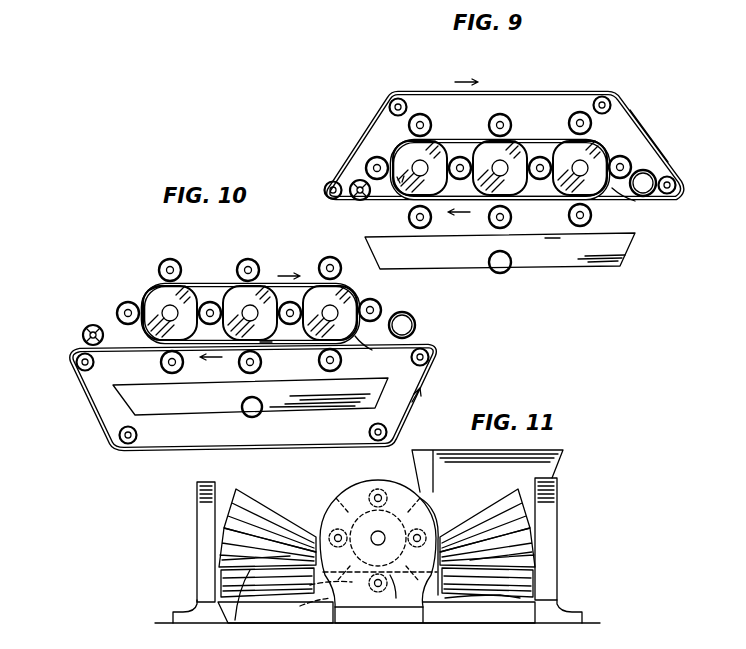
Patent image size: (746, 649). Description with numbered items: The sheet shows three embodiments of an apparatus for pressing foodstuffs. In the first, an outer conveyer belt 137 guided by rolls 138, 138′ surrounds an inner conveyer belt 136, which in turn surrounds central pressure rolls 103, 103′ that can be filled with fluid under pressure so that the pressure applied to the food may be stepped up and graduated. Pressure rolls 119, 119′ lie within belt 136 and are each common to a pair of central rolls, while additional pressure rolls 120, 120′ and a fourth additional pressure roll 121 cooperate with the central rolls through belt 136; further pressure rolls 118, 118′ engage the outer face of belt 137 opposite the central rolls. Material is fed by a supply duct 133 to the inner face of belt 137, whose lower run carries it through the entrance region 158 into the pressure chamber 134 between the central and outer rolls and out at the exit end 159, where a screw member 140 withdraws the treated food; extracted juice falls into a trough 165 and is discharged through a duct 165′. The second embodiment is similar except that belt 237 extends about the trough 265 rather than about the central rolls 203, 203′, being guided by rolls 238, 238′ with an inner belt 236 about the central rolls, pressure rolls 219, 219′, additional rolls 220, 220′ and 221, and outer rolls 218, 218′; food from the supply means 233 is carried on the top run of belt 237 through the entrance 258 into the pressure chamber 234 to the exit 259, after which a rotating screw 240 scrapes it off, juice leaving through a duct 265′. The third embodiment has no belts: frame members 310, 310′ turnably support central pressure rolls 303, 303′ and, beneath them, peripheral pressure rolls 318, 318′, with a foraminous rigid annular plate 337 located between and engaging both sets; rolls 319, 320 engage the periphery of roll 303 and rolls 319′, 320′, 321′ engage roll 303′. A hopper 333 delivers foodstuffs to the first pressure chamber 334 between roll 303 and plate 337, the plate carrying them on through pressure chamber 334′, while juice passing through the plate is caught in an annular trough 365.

In FIG. 9, the central pressure roll 103 is at (590, 151).
In FIG. 9, the central pressure roll 103′ is at (476, 141).
In FIG. 9, the pressure roll 118 is at (590, 218).
In FIG. 9, the pressure roll 118′ is at (511, 219).
In FIG. 9, the pressure roll 119 is at (538, 156).
In FIG. 9, the pressure roll 119′ is at (457, 157).
In FIG. 9, the additional pressure roll 120 is at (578, 111).
In FIG. 9, the additional pressure roll 120′ is at (501, 113).
In FIG. 9, the fourth additional pressure roll 121 is at (640, 155).
In FIG. 9, the supply duct 133 is at (656, 174).
In FIG. 9, the pressure chamber 134 is at (558, 248).
In FIG. 9, the inner conveyer belt 136 is at (622, 155).
In FIG. 9, the outer conveyer belt 137 is at (547, 93).
In FIG. 9, the guide roll 138 is at (606, 97).
In FIG. 9, the guide roll 138′ is at (677, 186).
In FIG. 9, the screw member 140 is at (366, 205).
In FIG. 9, the entrance region 158 is at (628, 206).
In FIG. 9, the exit end 159 is at (392, 199).
In FIG. 9, the trough 165 is at (629, 246).
In FIG. 9, the duct 165′ is at (509, 268).
In FIG. 10, the central pressure roll 203 is at (355, 278).
In FIG. 10, the central pressure roll 203′ is at (264, 288).
In FIG. 10, the pressure roll 218 is at (342, 366).
In FIG. 10, the pressure roll 218′ is at (261, 368).
In FIG. 10, the pressure roll 219 is at (291, 301).
In FIG. 10, the pressure roll 219′ is at (206, 301).
In FIG. 10, the additional pressure roll 220 is at (329, 256).
In FIG. 10, the additional pressure roll 220′ is at (248, 258).
In FIG. 10, the fourth additional pressure roll 221 is at (377, 304).
In FIG. 10, the supply means 233 is at (410, 320).
In FIG. 10, the pressure chamber 234 is at (270, 346).
In FIG. 10, the inner conveyer belt 236 is at (148, 290).
In FIG. 10, the outer conveyer belt 237 is at (426, 365).
In FIG. 10, the guide roll 238 is at (424, 349).
In FIG. 10, the guide roll 238′ is at (75, 362).
In FIG. 10, the rotating screw 240 is at (92, 324).
In FIG. 10, the entrance 258 is at (365, 348).
In FIG. 10, the exit 259 is at (145, 340).
In FIG. 10, the trough 265 is at (166, 415).
In FIG. 10, the duct 265′ is at (248, 418).
In FIG. 11, the central pressure roll 303 is at (520, 540).
In FIG. 11, the central pressure roll 303′ is at (345, 490).
In FIG. 11, the frame member 310 is at (558, 486).
In FIG. 11, the frame member 310′ is at (432, 615).
In FIG. 11, the peripheral pressure roll 318 is at (535, 577).
In FIG. 11, the peripheral pressure roll 318′ is at (372, 592).
In FIG. 11, the pressure roll 319 is at (535, 552).
In FIG. 11, the pressure roll 319′ is at (330, 532).
In FIG. 11, the pressure roll 320 is at (498, 505).
In FIG. 11, the pressure roll 320′ is at (378, 488).
In FIG. 11, the pressure roll 321′ is at (425, 532).
In FIG. 11, the hopper 333 is at (558, 460).
In FIG. 11, the first pressure chamber 334 is at (480, 588).
In FIG. 11, the pressure chamber 334′ is at (407, 593).
In FIG. 11, the foraminous rigid annular plate 337 is at (312, 603).
In FIG. 11, the annular trough 365 is at (560, 600).